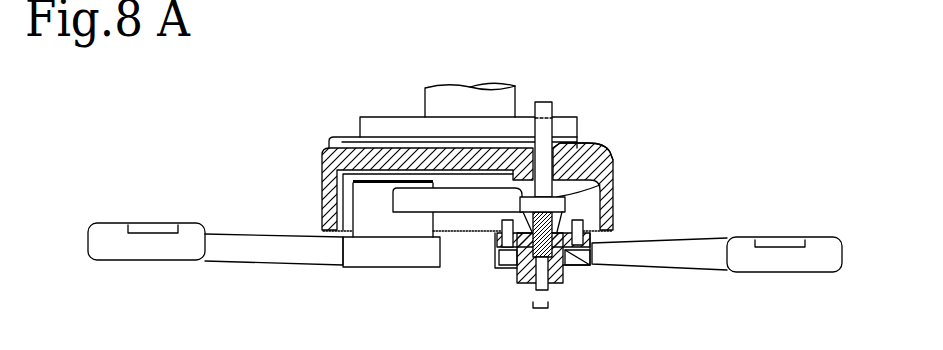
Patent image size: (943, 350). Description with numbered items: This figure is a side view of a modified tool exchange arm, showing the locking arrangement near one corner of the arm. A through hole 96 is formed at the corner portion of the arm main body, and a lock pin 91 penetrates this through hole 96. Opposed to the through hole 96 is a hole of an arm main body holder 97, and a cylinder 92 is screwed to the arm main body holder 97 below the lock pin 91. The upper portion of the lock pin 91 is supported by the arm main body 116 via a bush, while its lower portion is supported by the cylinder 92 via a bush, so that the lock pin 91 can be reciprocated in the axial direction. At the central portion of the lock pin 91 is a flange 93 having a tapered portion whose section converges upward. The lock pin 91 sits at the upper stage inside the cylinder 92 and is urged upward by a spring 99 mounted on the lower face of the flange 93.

The lock pin 91 is at (541, 103).
The cylinder 92 is at (565, 278).
The flange 93 is at (614, 185).
The through hole 96 is at (563, 146).
The arm main body holder 97 is at (612, 234).
The spring 99 is at (608, 262).
The arm main body 116 is at (617, 150).